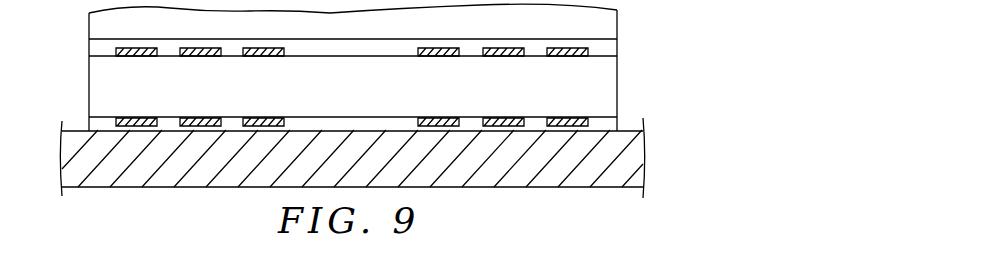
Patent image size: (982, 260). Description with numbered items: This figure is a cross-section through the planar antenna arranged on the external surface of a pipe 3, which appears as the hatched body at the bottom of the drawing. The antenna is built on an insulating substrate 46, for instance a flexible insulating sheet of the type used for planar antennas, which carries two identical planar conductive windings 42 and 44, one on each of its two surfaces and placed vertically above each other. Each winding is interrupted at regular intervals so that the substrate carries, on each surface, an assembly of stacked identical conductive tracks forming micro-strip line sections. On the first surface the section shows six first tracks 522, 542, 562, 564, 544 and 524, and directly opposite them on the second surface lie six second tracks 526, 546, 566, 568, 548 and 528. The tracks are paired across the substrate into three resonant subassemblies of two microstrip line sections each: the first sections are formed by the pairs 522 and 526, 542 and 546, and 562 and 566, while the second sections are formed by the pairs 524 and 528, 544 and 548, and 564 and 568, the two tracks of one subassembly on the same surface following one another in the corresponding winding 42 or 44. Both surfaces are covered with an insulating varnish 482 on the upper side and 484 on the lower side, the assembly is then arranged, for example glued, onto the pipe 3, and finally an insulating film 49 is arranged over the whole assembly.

The pipe 3 is at (342, 167).
The planar conductive winding 42 is at (89, 50).
The planar conductive winding 44 is at (89, 127).
The insulating substrate 46 is at (311, 90).
The insulating film 49 is at (89, 33).
The insulating varnish 482 is at (342, 48).
The insulating varnish 484 is at (370, 122).
The first track 522 is at (136, 48).
The first track 542 is at (200, 48).
The first track 562 is at (263, 48).
The first track 564 is at (438, 48).
The first track 544 is at (503, 48).
The first track 524 is at (567, 48).
The second track 526 is at (136, 118).
The second track 546 is at (200, 118).
The second track 566 is at (263, 118).
The second track 568 is at (438, 118).
The second track 548 is at (503, 118).
The second track 528 is at (567, 118).